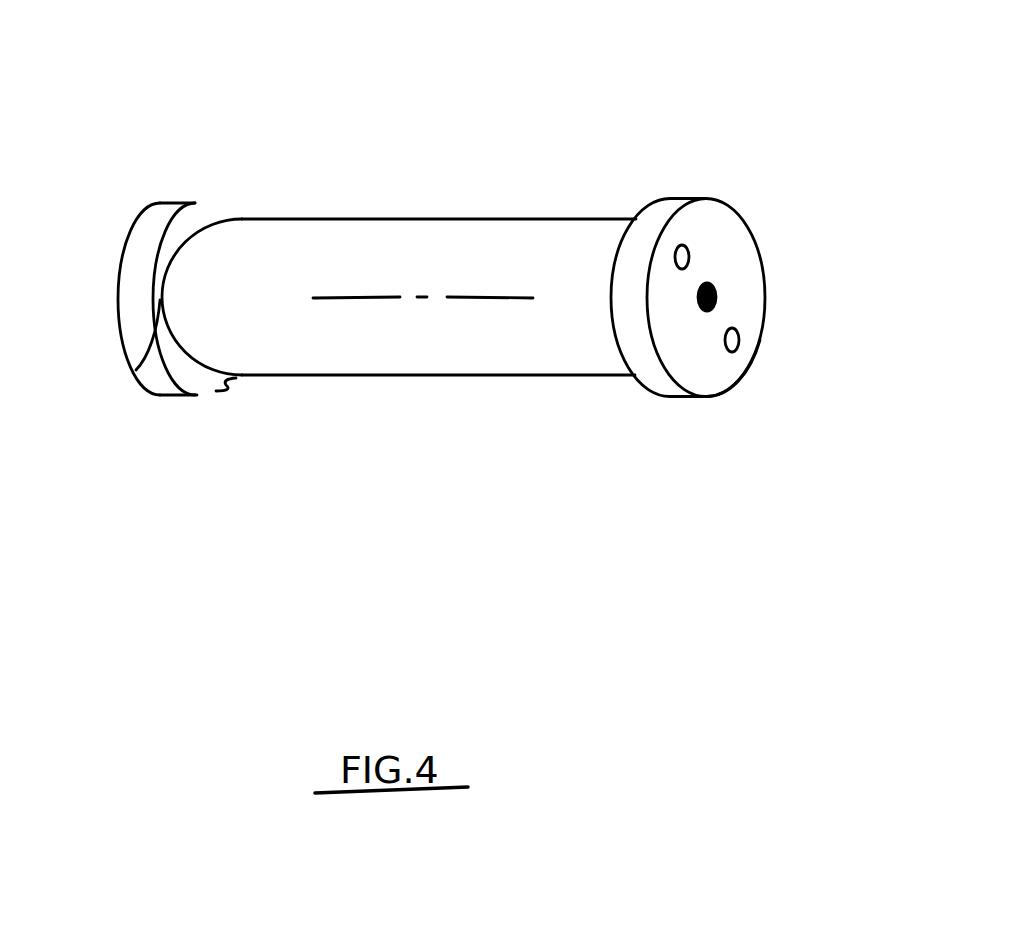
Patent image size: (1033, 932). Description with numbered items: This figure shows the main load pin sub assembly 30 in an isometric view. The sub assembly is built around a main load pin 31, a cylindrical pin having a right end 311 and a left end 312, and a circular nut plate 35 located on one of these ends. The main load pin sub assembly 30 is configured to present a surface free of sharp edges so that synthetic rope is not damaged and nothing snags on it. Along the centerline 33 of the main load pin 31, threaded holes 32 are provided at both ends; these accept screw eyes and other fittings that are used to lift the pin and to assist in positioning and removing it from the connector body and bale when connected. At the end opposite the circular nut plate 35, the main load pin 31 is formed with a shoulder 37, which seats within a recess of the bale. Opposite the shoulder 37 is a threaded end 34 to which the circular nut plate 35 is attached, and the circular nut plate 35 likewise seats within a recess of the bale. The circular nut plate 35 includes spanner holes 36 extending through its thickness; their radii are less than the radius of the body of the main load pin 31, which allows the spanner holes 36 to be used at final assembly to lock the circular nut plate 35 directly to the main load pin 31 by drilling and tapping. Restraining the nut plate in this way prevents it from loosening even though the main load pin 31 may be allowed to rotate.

The main load pin sub assembly 30 is at (693, 107).
The main load pin 31 is at (380, 375).
The threaded holes 32 is at (117, 372).
The centerline 33 is at (383, 293).
The threaded end 34 is at (703, 285).
The circular nut plate 35 is at (665, 397).
The spanner holes 36 is at (690, 245).
The shoulder 37 is at (214, 381).
The right end 311 is at (723, 400).
The left end 312 is at (113, 309).